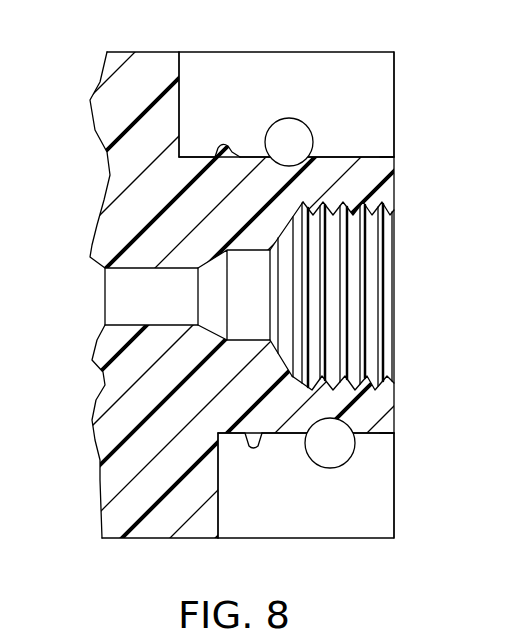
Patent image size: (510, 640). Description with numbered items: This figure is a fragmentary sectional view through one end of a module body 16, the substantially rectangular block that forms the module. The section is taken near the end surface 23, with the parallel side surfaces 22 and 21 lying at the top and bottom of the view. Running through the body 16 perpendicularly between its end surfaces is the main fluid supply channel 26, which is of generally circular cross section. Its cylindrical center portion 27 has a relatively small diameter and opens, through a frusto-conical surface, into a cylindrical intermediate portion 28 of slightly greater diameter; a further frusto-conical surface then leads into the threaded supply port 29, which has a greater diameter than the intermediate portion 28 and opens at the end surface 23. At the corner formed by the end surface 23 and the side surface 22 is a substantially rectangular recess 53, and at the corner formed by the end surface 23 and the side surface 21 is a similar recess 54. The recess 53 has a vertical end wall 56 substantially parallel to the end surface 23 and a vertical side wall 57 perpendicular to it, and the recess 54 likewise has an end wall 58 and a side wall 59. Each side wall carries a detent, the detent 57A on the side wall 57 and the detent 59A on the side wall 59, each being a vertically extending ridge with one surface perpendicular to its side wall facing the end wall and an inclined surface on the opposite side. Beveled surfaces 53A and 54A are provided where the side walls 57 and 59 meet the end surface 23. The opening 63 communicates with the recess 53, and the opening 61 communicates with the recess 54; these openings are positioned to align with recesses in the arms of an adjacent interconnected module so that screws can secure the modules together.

The body 16 is at (113, 485).
The side surface 21 is at (157, 540).
The side surface 22 is at (152, 52).
The end surface 23 is at (395, 131).
The main fluid supply channel 26 is at (352, 325).
The center portion 27 is at (168, 272).
The intermediate portion 28 is at (256, 250).
The threaded supply port 29 is at (337, 208).
The recess 53 is at (336, 72).
The beveled surface 53A is at (396, 164).
The recess 54 is at (329, 501).
The beveled surface 54A is at (396, 432).
The end wall 56 is at (181, 67).
The side wall 57 is at (253, 157).
The detent 57A is at (231, 150).
The end wall 58 is at (220, 524).
The side wall 59 is at (292, 434).
The detent 59A is at (256, 445).
The opening 61 is at (346, 456).
The opening 63 is at (312, 139).